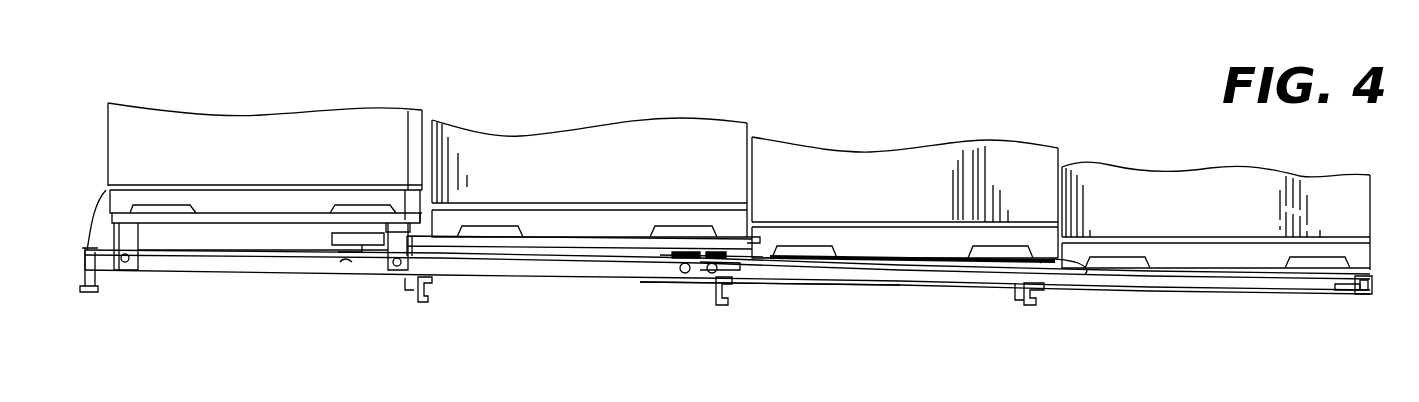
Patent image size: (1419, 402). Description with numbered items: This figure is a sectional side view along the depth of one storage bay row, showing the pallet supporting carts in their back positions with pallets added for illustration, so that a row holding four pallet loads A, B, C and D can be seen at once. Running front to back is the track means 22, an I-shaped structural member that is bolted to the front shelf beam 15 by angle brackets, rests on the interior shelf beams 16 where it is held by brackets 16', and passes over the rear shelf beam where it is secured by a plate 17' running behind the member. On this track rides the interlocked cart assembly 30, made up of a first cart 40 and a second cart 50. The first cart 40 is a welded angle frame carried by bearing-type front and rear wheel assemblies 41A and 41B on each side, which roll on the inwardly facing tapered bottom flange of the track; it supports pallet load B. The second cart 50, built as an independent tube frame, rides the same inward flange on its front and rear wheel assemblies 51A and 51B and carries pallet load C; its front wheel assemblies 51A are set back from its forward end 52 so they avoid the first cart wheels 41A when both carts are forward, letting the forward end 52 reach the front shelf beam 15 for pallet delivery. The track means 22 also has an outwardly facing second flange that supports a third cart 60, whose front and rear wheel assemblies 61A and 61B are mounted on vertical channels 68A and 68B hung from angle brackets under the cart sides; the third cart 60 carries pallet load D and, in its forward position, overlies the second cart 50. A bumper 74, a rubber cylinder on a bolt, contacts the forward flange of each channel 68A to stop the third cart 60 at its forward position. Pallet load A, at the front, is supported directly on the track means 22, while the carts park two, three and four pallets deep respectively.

The front shelf beam 15 is at (1370, 294).
The interior shelf beam 16 is at (760, 328).
The brackets 16' is at (716, 330).
The plate 17' is at (87, 305).
The track means 22 is at (553, 267).
The interlocked cart assembly 30 is at (906, 281).
The first cart 40 is at (838, 243).
The front wheel assembly 41A is at (1076, 279).
The rear wheel assembly 41B is at (685, 278).
The second cart 50 is at (563, 232).
The front wheel assemblies 51A is at (722, 274).
The rear wheel assemblies 51B is at (334, 280).
The forward end 52 is at (747, 250).
The third cart 60 is at (254, 224).
The front wheel assembly 61A is at (393, 278).
The rear wheel assembly 61B is at (128, 268).
The vertical channel 68A is at (404, 230).
The vertical channel 68B is at (106, 191).
The bumper 74 is at (1342, 284).
The pallet load A is at (1123, 156).
The pallet load B is at (898, 124).
The pallet load C is at (604, 112).
The pallet load D is at (352, 101).